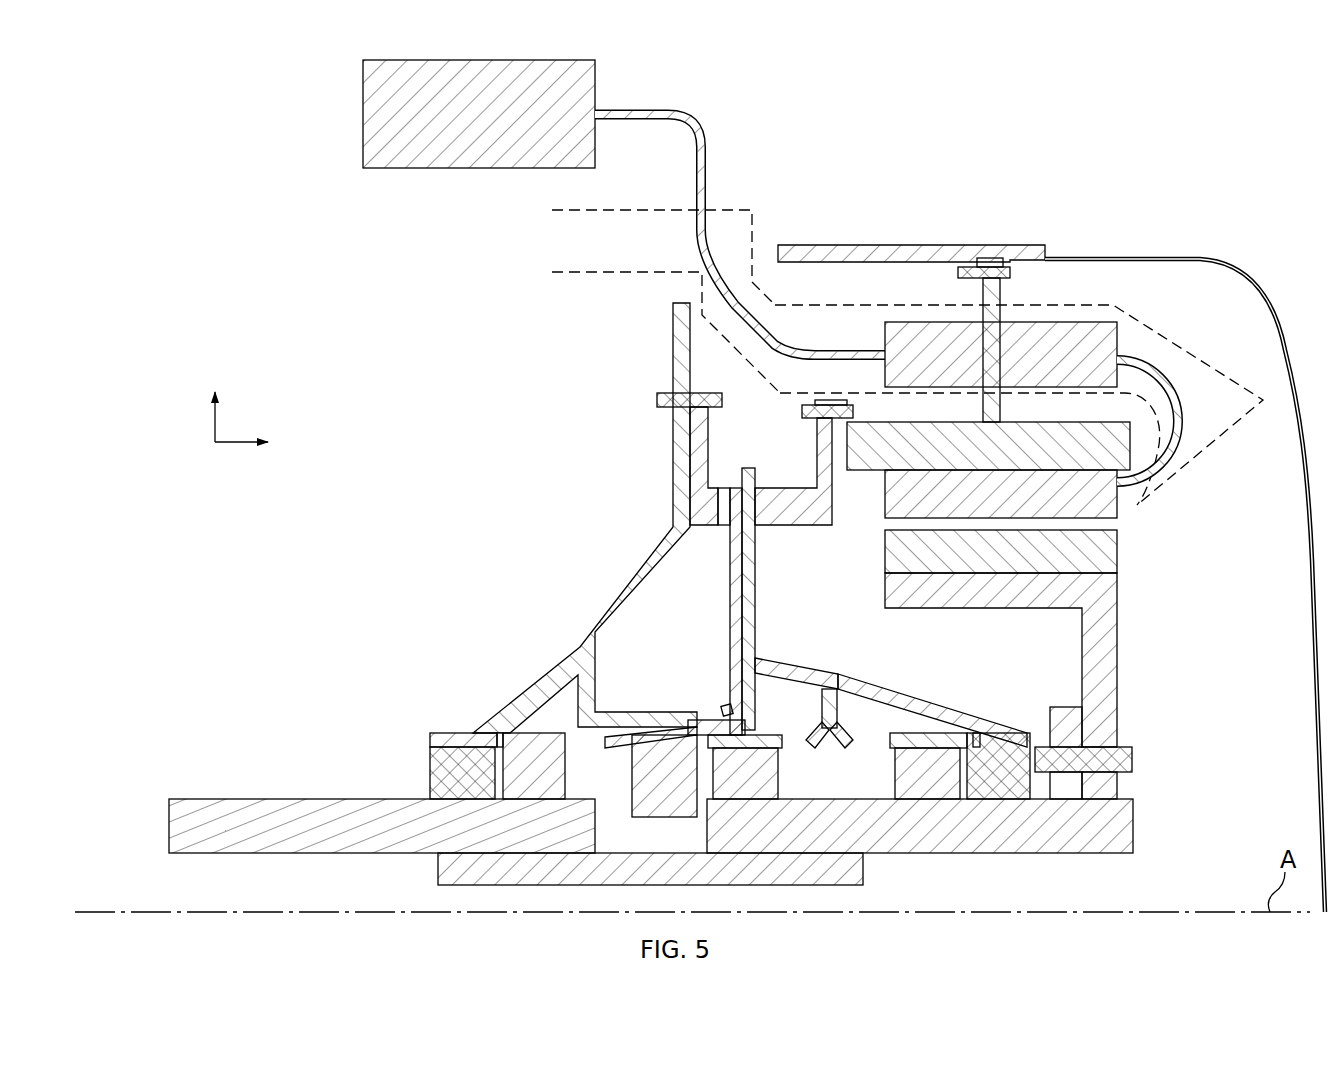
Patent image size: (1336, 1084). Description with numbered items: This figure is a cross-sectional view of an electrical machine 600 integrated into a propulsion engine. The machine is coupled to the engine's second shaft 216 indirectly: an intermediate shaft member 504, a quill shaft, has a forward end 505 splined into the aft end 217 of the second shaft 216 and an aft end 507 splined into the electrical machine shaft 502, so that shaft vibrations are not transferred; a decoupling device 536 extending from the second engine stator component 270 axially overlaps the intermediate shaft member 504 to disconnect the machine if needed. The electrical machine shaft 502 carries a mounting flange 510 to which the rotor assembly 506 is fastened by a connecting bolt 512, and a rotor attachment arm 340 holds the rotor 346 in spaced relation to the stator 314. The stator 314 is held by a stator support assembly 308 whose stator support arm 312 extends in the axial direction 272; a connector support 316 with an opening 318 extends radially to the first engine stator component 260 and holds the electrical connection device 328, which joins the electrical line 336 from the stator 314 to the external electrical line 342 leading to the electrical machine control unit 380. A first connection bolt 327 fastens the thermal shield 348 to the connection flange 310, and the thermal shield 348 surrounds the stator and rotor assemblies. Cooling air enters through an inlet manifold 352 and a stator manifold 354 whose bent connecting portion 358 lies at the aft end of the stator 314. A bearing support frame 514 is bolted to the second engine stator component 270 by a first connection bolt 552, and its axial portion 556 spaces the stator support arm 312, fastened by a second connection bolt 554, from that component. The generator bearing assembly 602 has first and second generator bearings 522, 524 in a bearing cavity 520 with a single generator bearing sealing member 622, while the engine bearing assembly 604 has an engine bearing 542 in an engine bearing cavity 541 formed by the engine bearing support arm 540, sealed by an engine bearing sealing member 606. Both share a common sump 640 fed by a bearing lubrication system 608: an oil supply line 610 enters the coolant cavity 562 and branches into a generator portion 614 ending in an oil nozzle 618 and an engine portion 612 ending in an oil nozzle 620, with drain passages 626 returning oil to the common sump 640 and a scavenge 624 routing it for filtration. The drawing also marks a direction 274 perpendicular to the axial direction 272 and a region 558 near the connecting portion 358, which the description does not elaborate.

The second shaft 216 is at (169, 826).
The aft end 217 is at (600, 822).
The first engine stator component 260 is at (912, 247).
The second engine stator component 270 is at (675, 345).
The axial direction 272 is at (250, 442).
The vertical axis 274 is at (215, 412).
The stator support assembly 308 is at (1062, 290).
The connection flange 310 is at (988, 258).
The stator support arm 312 is at (1006, 458).
The stator 314 is at (1026, 504).
The connector support 316 is at (1000, 410).
The opening 318 is at (905, 318).
The first connection bolt 327 is at (958, 272).
The electrical connection device 328 is at (885, 335).
The electrical line 336 is at (1186, 420).
The rotor attachment arm 340 is at (1030, 608).
The external electrical line 342 is at (648, 110).
The rotor 346 is at (1105, 548).
The thermal shield 348 is at (1240, 260).
The inlet manifold 352 is at (650, 209).
The stator manifold 354 is at (700, 288).
The connecting portion 358 is at (1117, 305).
The electrical machine control unit 380 is at (363, 114).
The electrical machine shaft 502 is at (1133, 820).
The intermediate shaft member 504 is at (810, 880).
The forward end 505 is at (438, 868).
The rotor assembly 506 is at (1155, 652).
The aft end 507 is at (863, 870).
The mounting flange 510 is at (1050, 725).
The connecting bolt 512 is at (1133, 757).
The bearing support frame 514 is at (730, 610).
The bearing cavity 520 is at (858, 720).
The first generator bearing 522 is at (750, 790).
The second generator bearing 524 is at (930, 790).
The decoupling device 536 is at (685, 788).
The engine bearing support arm 540 is at (440, 735).
The engine bearing cavity 541 is at (453, 747).
The engine bearing 542 is at (535, 795).
The first connection bolt 552 is at (660, 400).
The second connection bolt 554 is at (808, 405).
The axial portion 556 is at (795, 490).
The region 558 is at (1218, 350).
The coolant cavity 562 is at (810, 557).
The electrical machine 600 is at (1162, 127).
The generator bearing assembly 602 is at (850, 672).
The engine bearing assembly 604 is at (338, 727).
The engine bearing sealing member 606 is at (472, 771).
The bearing lubrication system 608 is at (815, 640).
The oil supply line 610 is at (755, 620).
The engine portion 612 is at (718, 720).
The generator portion 614 is at (870, 672).
The oil nozzle 618 is at (835, 750).
The oil nozzle 620 is at (605, 740).
The generator bearing sealing member 622 is at (1003, 790).
The scavenge 624 is at (727, 527).
The drain passages 626 is at (503, 737).
The common sump 640 is at (680, 846).